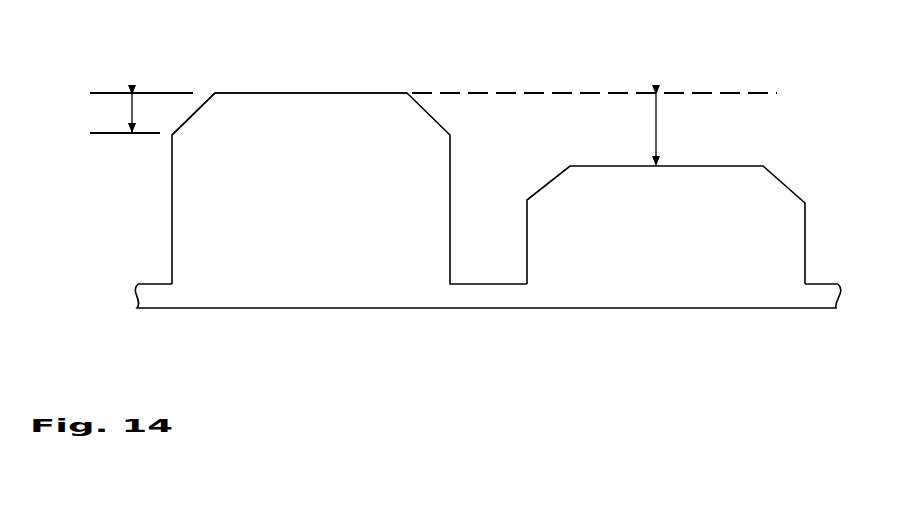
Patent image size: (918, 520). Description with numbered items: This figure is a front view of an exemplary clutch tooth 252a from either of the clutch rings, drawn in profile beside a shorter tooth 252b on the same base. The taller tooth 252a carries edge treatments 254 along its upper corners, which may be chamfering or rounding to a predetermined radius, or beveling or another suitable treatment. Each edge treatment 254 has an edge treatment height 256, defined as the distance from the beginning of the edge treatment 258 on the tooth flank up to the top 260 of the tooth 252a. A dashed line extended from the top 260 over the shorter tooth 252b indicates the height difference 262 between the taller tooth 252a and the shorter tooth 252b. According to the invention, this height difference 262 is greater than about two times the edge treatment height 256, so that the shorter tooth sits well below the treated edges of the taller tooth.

The tooth 252a is at (288, 217).
The shorter tooth 252b is at (642, 244).
The edge treatments 254 is at (184, 84).
The edge treatment height 256 is at (120, 113).
The beginning of the edge treatment 258 is at (168, 135).
The top 260 is at (316, 92).
The height difference 262 is at (653, 127).